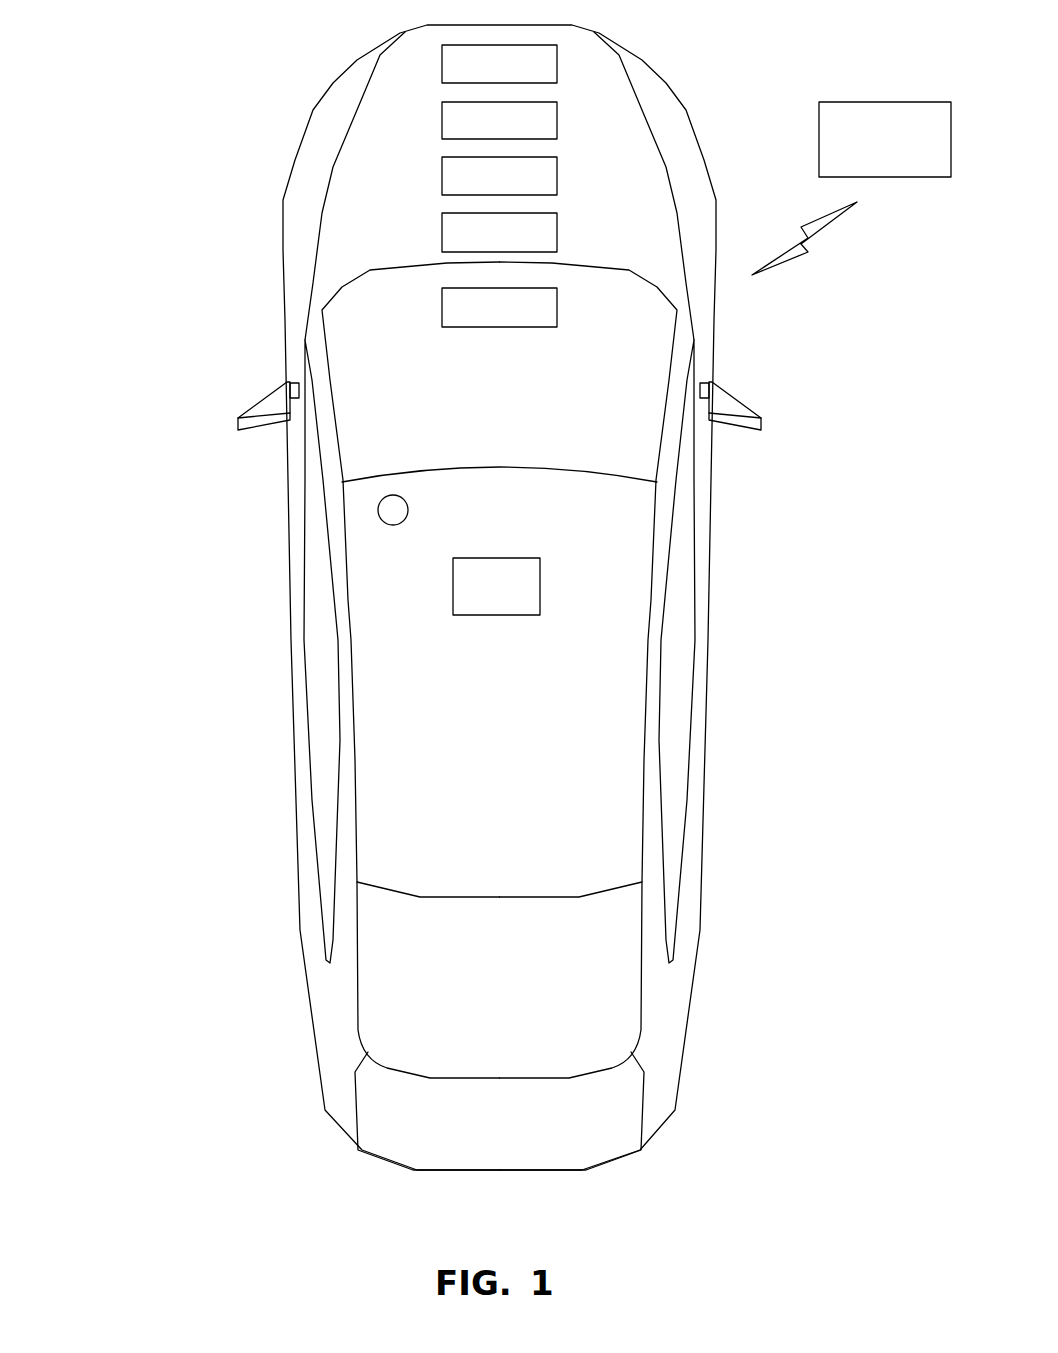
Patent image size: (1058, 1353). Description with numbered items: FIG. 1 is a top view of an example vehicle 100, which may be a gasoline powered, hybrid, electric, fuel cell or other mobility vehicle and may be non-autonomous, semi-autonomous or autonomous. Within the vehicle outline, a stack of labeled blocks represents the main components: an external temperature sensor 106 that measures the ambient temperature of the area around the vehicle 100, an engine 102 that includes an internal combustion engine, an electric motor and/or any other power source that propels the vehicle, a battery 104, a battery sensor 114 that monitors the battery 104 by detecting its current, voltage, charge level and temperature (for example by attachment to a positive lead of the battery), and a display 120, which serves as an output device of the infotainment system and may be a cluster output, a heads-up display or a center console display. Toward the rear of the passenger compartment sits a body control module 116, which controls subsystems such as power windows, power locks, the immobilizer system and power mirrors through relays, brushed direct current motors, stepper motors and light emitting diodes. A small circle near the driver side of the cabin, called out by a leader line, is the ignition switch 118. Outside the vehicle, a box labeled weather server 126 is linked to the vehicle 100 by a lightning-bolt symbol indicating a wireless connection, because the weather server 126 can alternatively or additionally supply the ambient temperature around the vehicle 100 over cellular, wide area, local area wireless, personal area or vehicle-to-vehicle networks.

The vehicle 100 is at (138, 63).
The engine 102 is at (499, 120).
The battery 104 is at (499, 176).
The external temperature sensor 106 is at (499, 64).
The battery sensor 114 is at (499, 232).
The body control module 116 is at (496, 586).
The ignition switch 118 is at (377, 510).
The display 120 is at (499, 307).
The weather server 126 is at (875, 100).